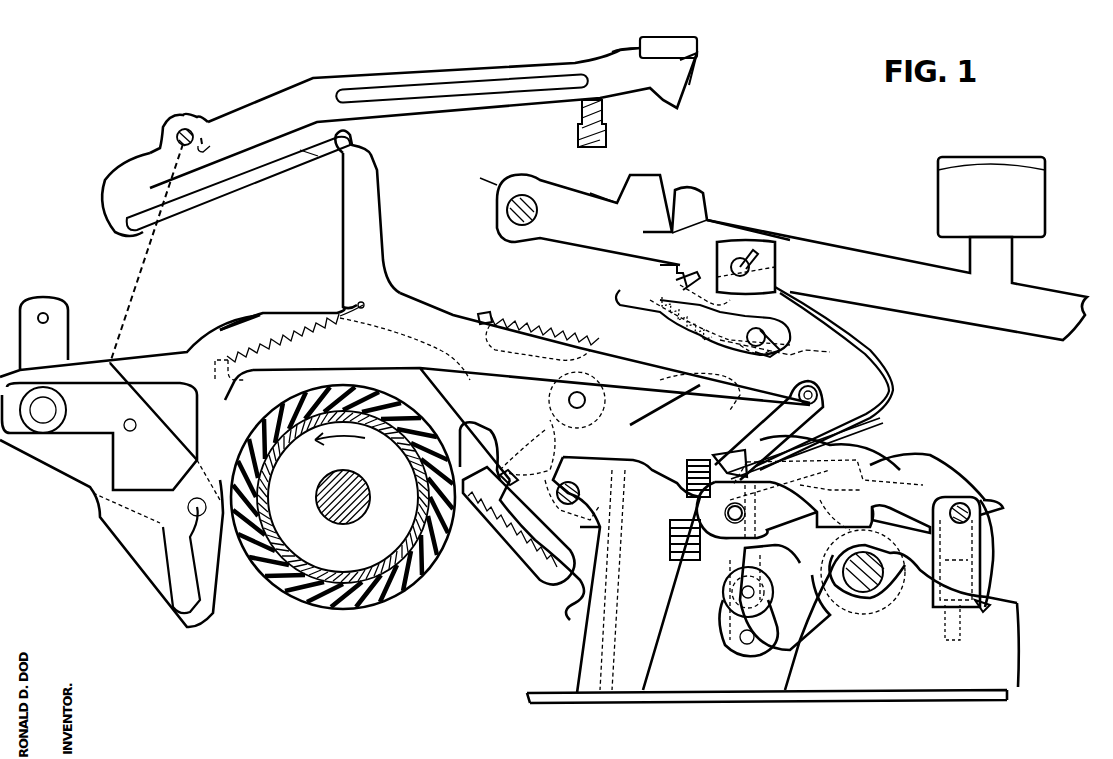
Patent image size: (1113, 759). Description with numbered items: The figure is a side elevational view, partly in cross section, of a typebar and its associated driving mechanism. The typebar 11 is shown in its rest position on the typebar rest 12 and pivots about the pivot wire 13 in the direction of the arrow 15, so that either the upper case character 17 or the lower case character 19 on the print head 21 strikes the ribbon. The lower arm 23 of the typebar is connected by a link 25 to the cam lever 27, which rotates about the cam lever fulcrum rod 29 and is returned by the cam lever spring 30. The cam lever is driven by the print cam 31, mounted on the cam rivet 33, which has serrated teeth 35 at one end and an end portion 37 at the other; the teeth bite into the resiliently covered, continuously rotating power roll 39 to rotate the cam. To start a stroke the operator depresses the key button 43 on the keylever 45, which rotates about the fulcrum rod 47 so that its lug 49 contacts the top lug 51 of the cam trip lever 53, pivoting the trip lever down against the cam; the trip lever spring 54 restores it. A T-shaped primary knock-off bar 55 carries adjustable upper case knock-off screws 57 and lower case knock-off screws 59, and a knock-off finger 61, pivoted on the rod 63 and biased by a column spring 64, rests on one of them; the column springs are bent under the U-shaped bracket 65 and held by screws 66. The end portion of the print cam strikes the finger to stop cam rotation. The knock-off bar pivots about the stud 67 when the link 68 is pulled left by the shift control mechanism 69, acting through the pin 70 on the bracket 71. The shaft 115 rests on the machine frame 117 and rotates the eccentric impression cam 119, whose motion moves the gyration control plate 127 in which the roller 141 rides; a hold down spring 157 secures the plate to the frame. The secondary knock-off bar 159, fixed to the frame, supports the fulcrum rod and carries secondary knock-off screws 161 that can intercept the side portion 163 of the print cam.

The typebar 11 is at (305, 111).
The typebar rest 12 is at (606, 122).
The pivot wire 13 is at (190, 130).
The arrow 15 is at (210, 146).
The upper case character 17 is at (697, 47).
The lower case character 19 is at (612, 52).
The print head 21 is at (695, 65).
The lower arm 23 is at (105, 181).
The link 25 is at (274, 176).
The cam lever 27 is at (385, 256).
The cam lever fulcrum rod 29 is at (570, 483).
The cam lever spring 30 is at (280, 358).
The print cam 31 is at (497, 455).
The cam rivet 33 is at (549, 411).
The serrated teeth 35 is at (520, 550).
The end portion 37 is at (790, 360).
The power roll 39 is at (280, 585).
The key button 43 is at (972, 168).
The keylever 45 is at (873, 283).
The fulcrum rod 47 is at (507, 195).
The lug 49 is at (660, 268).
The top lug 51 is at (695, 275).
The cam trip lever 53 is at (690, 300).
The trip lever spring 54 is at (770, 336).
The primary knock-off bar 55 is at (875, 520).
The upper case knock-off screw 57 is at (800, 645).
The lower case knock-off screw 59 is at (690, 565).
The knock-off finger 61 is at (730, 462).
The rod 63 is at (968, 500).
The column spring 64 is at (997, 570).
The U-shaped bracket 65 is at (980, 608).
The screw 66 is at (960, 638).
The stud 67 is at (820, 488).
The link 68 is at (410, 346).
The shift control mechanism 69 is at (143, 451).
The pin 70 is at (817, 392).
The bracket 71 is at (810, 425).
The shaft 115 is at (858, 592).
The machine frame 117 is at (732, 250).
The impression cam 119 is at (905, 580).
The gyration control plate 127 is at (730, 645).
The roller 141 is at (728, 615).
The hold down spring 157 is at (895, 372).
The secondary knock-off bar 159 is at (602, 638).
The secondary knock-off screw 161 is at (687, 470).
The side portion 163 is at (718, 395).